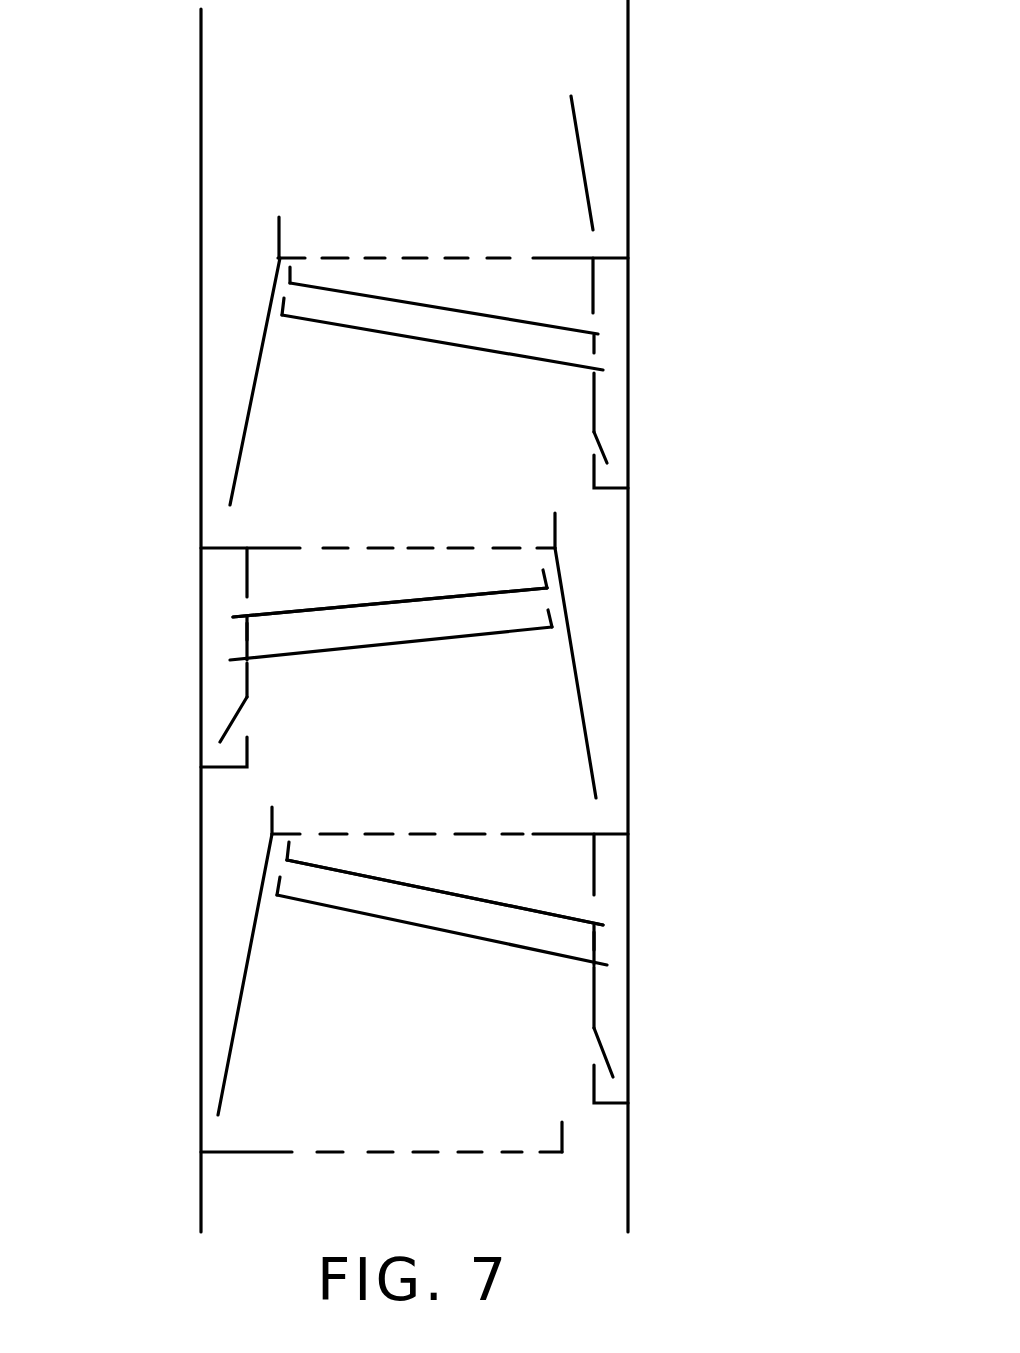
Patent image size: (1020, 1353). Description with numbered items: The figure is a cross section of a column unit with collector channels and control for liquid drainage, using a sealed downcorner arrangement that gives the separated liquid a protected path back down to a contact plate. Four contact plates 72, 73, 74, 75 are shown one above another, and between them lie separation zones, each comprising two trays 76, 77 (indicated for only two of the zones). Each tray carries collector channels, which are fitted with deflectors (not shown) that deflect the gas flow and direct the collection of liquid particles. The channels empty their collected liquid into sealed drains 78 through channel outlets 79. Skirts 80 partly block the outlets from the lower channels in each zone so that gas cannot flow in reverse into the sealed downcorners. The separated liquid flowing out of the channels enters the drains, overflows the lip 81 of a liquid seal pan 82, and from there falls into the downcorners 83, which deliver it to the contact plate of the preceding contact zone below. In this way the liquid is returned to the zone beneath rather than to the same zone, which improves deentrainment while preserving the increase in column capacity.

The contact plate 72 is at (415, 258).
The contact plate 73 is at (388, 548).
The contact plate 74 is at (427, 834).
The contact plate 75 is at (383, 1152).
The tray 76 is at (425, 642).
The tray 77 is at (377, 600).
The sealed drain 78 is at (612, 322).
The channel outlet 79 is at (243, 602).
The skirt 80 is at (247, 625).
The lip 81 is at (248, 753).
The liquid seal pan 82 is at (218, 755).
The downcorner 83 is at (602, 653).